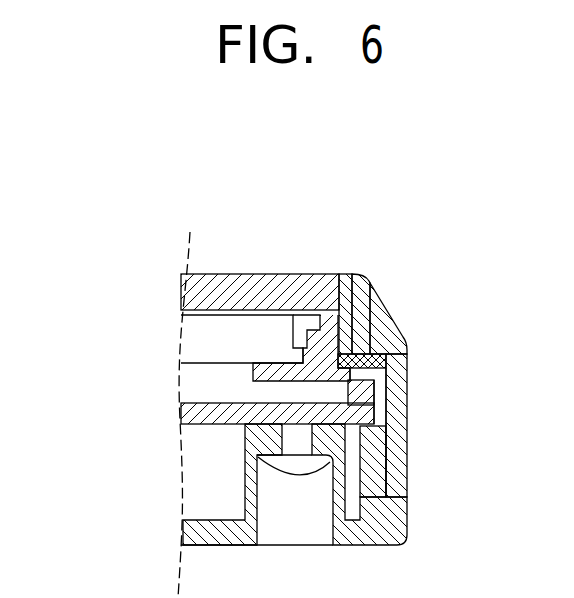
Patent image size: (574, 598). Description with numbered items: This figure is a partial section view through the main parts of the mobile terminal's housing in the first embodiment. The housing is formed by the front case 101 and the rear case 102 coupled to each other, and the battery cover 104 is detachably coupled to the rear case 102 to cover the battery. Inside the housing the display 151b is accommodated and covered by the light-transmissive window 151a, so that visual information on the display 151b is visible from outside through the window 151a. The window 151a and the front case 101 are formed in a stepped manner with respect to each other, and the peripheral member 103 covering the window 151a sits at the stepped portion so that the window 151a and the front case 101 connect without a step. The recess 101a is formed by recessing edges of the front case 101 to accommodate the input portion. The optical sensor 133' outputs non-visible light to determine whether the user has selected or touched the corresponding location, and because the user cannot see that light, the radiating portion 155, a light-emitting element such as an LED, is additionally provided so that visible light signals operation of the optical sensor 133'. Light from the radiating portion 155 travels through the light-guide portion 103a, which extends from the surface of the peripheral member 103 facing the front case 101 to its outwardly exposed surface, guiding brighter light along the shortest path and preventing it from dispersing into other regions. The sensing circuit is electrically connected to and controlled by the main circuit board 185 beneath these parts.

The window 151a is at (231, 293).
The display 151b is at (185, 333).
The recess 101a is at (336, 300).
The light-guide portion 103a is at (365, 302).
The peripheral member 103 is at (383, 320).
The optical sensor 133' is at (412, 353).
The radiating portion 155 is at (348, 393).
The main circuit board 185 is at (185, 412).
The front case 101 is at (393, 402).
The rear case 102 is at (377, 456).
The battery cover 104 is at (397, 517).